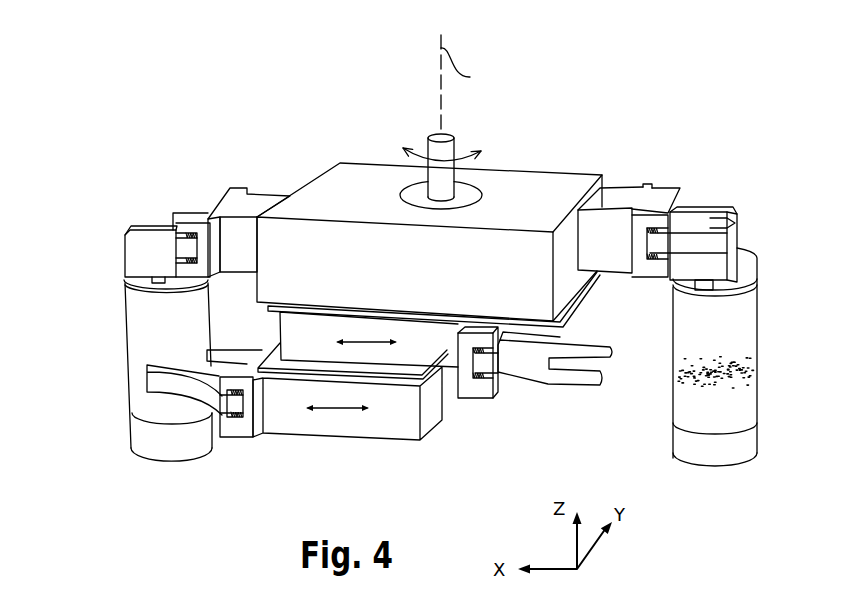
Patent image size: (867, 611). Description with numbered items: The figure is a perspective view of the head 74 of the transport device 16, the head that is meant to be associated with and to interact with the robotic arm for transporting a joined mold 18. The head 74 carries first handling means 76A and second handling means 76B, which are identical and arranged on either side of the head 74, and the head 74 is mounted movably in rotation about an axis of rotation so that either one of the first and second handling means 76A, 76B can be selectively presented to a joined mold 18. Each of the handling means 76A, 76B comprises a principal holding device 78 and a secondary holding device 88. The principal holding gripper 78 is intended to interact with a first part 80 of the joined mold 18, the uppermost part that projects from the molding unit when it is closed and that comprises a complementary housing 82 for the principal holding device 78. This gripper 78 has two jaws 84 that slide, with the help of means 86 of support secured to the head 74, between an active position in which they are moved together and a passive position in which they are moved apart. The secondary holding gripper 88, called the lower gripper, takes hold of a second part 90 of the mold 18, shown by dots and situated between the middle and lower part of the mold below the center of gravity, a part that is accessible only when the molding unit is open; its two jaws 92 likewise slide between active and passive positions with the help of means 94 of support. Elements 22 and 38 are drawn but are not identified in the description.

The transport device 16 is at (372, 92).
The joined mold 18 is at (82, 385).
The container 22 is at (147, 320).
The container base 38 is at (153, 442).
The head 74 is at (429, 230).
The first handling means 76A is at (740, 178).
The second handling means 76B is at (118, 192).
The principal holding device 78 is at (104, 230).
The first part of the joined mold 80 is at (785, 264).
The complementary housing 82 is at (123, 280).
The jaws 84 is at (177, 212).
The means of support 86 is at (222, 201).
The secondary holding device 88 is at (194, 414).
The second part of the joined mold 90 is at (723, 370).
The jaws 92 is at (157, 383).
The means of support 94 is at (248, 402).